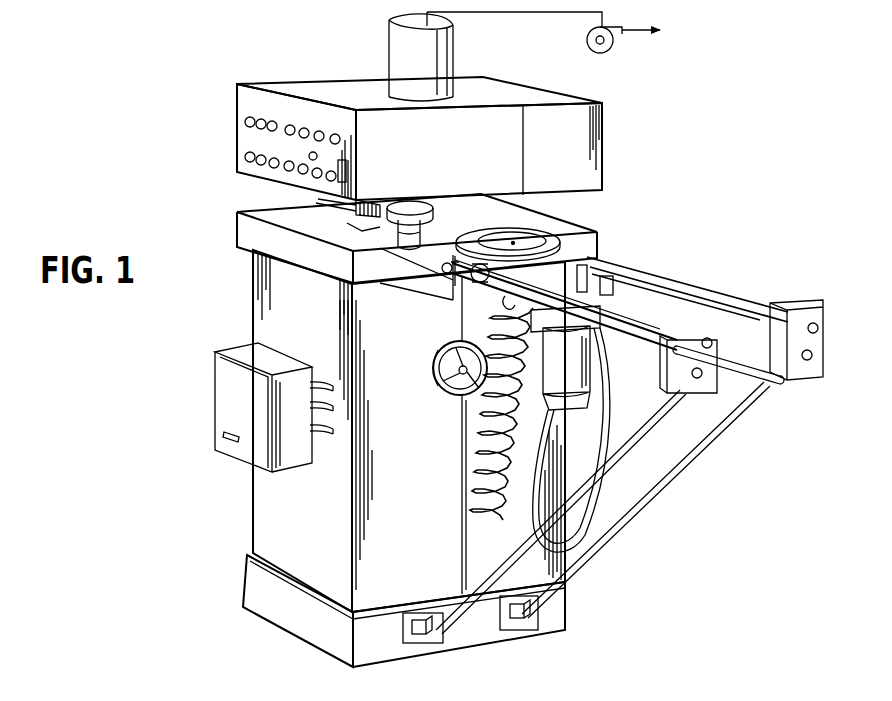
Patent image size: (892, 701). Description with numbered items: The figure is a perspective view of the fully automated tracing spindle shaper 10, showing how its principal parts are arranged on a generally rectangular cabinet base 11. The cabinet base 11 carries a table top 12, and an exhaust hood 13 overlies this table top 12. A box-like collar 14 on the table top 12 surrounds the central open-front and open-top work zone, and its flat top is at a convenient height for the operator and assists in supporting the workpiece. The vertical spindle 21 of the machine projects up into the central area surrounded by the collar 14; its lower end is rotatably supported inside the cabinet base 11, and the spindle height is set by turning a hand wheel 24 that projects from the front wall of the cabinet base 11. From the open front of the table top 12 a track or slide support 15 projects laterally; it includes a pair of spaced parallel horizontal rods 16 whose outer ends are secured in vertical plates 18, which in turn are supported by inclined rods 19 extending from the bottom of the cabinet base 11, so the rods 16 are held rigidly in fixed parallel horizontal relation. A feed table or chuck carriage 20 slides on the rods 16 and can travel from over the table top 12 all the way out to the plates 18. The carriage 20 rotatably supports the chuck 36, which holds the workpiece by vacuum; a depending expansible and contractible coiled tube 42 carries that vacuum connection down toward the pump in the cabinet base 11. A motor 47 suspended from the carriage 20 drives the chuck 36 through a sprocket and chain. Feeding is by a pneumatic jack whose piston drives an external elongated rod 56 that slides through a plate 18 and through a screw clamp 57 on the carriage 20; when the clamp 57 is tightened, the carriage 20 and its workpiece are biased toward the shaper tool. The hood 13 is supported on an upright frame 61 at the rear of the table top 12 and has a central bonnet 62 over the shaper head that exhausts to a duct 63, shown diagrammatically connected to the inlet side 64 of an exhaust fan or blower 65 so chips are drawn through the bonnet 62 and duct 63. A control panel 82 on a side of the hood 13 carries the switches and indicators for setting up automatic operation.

The automatic tracing spindle shaper 10 is at (198, 444).
The cabinet base 11 is at (252, 540).
The table top 12 is at (418, 282).
The exhaust hood 13 is at (587, 169).
The box-like collar 14 is at (308, 229).
The track or slide support 15 is at (698, 263).
The horizontal rods 16 is at (655, 321).
The vertical brace connected plates 18 is at (770, 305).
The inclined rods 19 is at (656, 481).
The feed table or chuck carriage 20 is at (577, 261).
The vertical spindle 21 is at (404, 237).
The hand wheel 24 is at (446, 390).
The feed table or chuck 36 is at (548, 236).
The coiled tube 42 is at (473, 456).
The motor 47 is at (592, 377).
The elongated rod 56 is at (757, 383).
The screw clamp 57 is at (455, 290).
The upright frame 61 is at (318, 204).
The central bonnet 62 is at (486, 159).
The duct 63 is at (389, 42).
The inlet side 64 is at (588, 42).
The exhaust fan or blower 65 is at (606, 54).
The control panel 82 is at (237, 84).